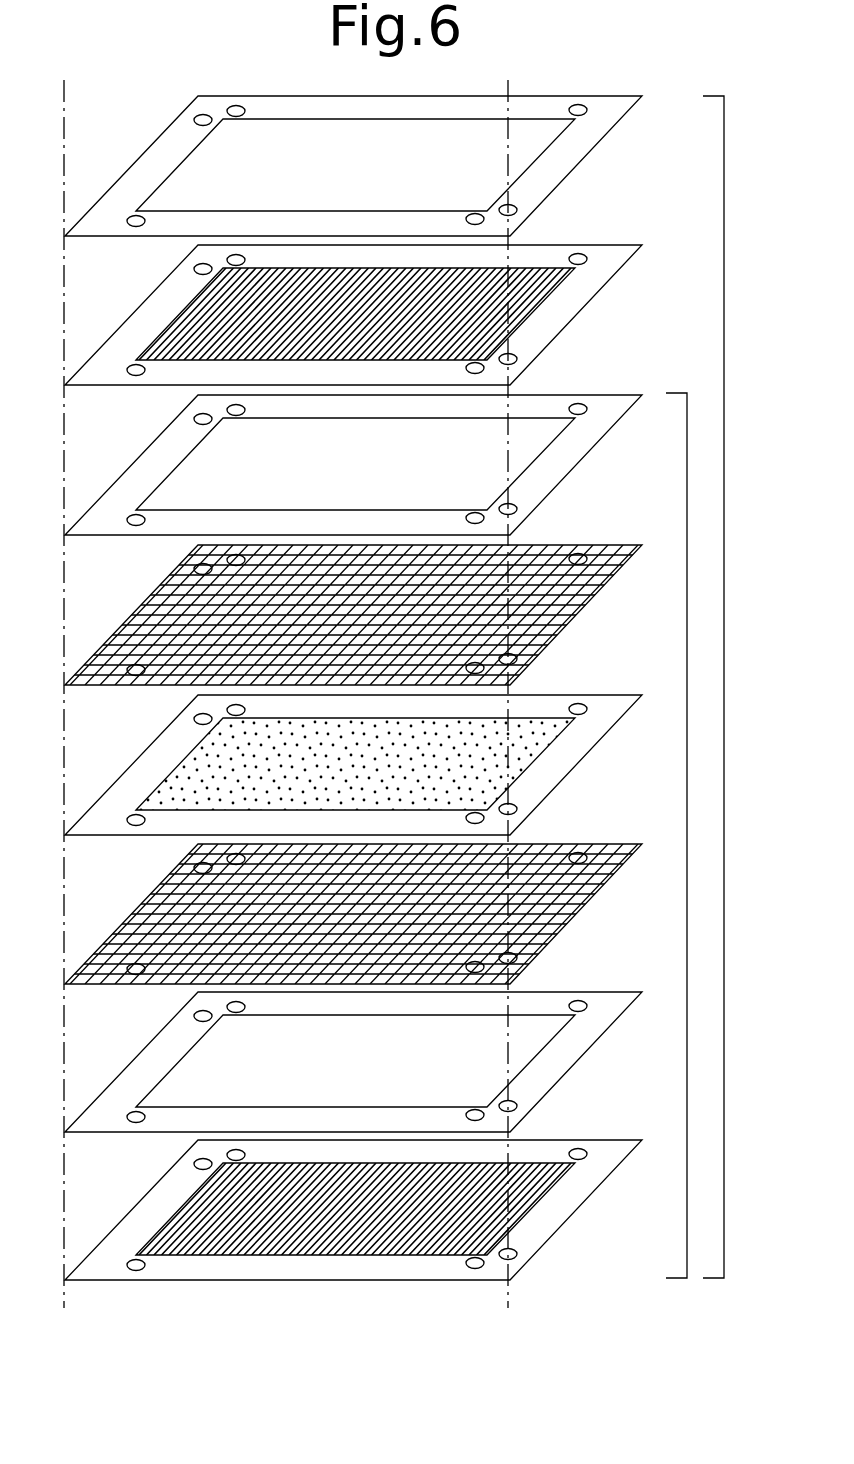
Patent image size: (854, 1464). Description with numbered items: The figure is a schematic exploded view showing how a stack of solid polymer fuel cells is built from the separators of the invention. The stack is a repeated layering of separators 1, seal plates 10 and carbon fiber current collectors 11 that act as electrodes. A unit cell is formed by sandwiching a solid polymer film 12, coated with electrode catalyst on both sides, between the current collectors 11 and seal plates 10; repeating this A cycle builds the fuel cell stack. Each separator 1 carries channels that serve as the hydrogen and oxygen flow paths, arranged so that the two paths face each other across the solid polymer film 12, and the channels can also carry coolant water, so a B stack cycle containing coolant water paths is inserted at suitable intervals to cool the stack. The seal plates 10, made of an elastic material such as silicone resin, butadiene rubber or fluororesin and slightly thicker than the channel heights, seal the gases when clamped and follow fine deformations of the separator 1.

The seal plate 10 is at (570, 154).
The separator 1 is at (578, 289).
The carbon fiber current collector 11 is at (565, 600).
The solid polymer film 12 is at (570, 752).
The A cycle A is at (688, 835).
The B stack cycle B is at (727, 687).